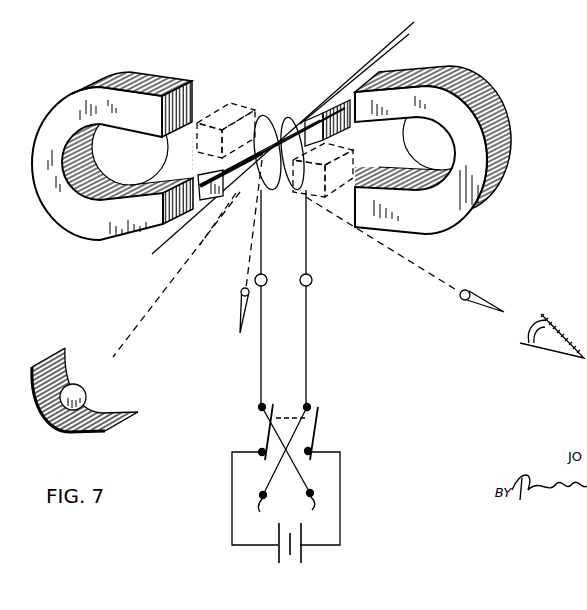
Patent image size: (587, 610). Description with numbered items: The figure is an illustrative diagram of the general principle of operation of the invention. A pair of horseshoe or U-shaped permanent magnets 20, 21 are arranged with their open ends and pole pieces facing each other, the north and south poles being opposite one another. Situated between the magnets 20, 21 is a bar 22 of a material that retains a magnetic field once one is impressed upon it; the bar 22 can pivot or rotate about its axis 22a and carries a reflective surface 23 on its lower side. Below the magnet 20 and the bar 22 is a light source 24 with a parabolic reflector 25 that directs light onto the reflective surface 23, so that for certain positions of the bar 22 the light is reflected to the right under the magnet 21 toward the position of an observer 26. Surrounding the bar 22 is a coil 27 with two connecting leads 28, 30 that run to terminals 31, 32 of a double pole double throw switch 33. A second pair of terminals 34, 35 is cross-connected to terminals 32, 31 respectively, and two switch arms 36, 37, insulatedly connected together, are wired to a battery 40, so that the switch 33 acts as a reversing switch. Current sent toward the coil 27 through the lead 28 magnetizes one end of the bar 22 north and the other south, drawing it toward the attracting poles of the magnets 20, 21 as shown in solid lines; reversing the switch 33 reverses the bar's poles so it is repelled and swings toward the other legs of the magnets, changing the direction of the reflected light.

The magnet 20 is at (160, 74).
The magnet 21 is at (505, 110).
The bar 22 is at (233, 112).
The axis 22a is at (392, 48).
The reflective surface 23 is at (345, 128).
The light source 24 is at (107, 381).
The reflector 25 is at (124, 417).
The observer 26 is at (545, 350).
The coil 27 is at (275, 115).
The connecting lead 28 is at (262, 322).
The connecting lead 30 is at (307, 316).
The terminal 31 is at (265, 405).
The terminal 32 is at (310, 405).
The double pole double throw switch 33 is at (381, 440).
The terminal 34 is at (259, 509).
The terminal 35 is at (318, 508).
The switch arm 36 is at (267, 433).
The switch arm 37 is at (316, 437).
The battery 40 is at (288, 523).